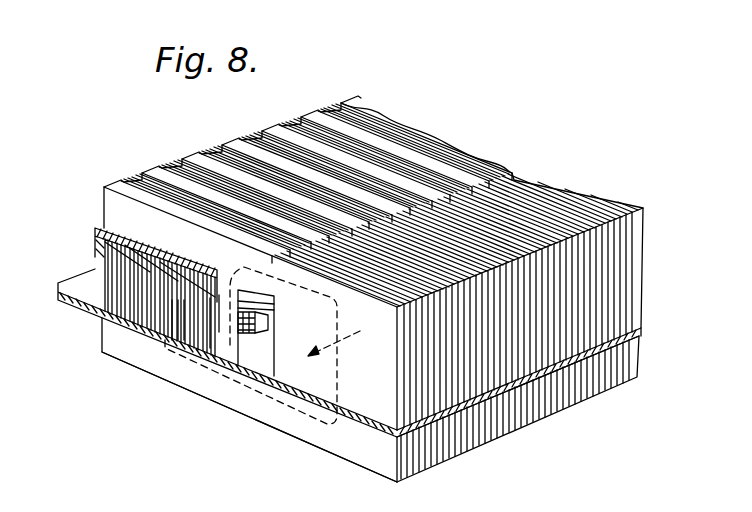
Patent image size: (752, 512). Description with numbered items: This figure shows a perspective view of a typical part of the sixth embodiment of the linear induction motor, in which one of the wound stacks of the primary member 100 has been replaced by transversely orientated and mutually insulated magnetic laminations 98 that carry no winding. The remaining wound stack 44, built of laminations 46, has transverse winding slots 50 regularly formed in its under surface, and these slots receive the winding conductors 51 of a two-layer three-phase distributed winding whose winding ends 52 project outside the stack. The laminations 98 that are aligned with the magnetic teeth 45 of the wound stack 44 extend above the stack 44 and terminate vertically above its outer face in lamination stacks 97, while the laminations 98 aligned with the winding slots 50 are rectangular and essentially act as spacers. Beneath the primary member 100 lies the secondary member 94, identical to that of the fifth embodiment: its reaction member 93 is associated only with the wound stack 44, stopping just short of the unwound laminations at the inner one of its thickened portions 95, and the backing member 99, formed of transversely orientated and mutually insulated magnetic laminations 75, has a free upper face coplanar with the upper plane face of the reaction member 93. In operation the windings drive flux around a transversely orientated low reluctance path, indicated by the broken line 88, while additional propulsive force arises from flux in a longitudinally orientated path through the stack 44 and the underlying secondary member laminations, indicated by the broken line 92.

The primary member 100 is at (103, 213).
The lamination stacks 97 is at (263, 130).
The magnetic laminations 98 is at (530, 237).
The broken line (transversely orientated low reluctance flux path) 88 is at (294, 264).
The stack 44 is at (150, 348).
The laminations 46 is at (184, 336).
The reaction member 93 is at (58, 297).
The thickened portions 95 is at (89, 314).
The secondary member 94 is at (364, 468).
The backing member 99 is at (161, 362).
The magnetic laminations 75 is at (441, 461).
The broken line (longitudinally orientated flux path) 92 is at (353, 336).
The magnetic teeth 45 is at (208, 333).
The winding slots 50 is at (233, 367).
The winding ends 52 is at (275, 304).
The winding conductors 51 is at (274, 332).